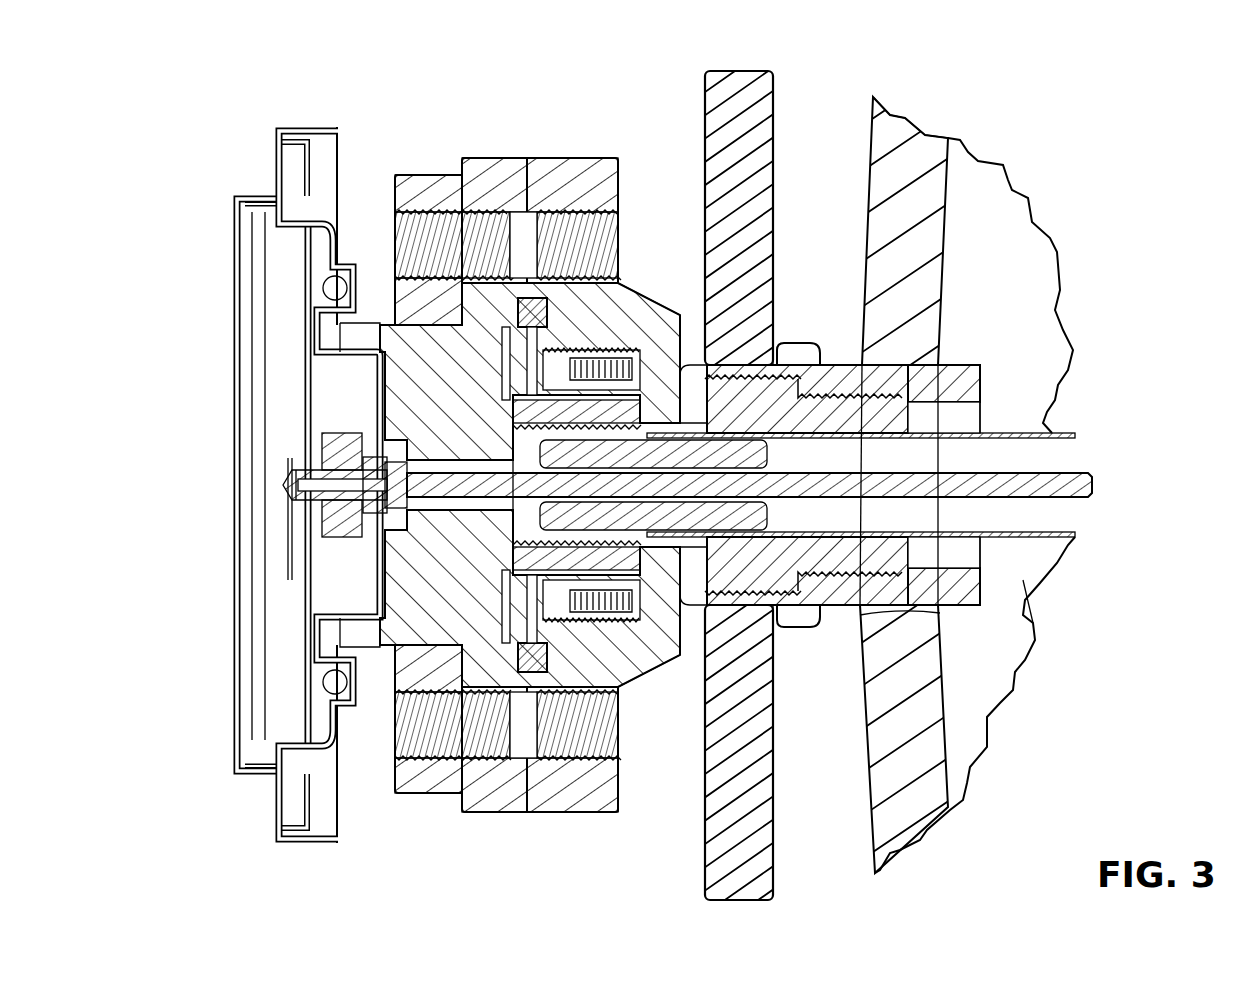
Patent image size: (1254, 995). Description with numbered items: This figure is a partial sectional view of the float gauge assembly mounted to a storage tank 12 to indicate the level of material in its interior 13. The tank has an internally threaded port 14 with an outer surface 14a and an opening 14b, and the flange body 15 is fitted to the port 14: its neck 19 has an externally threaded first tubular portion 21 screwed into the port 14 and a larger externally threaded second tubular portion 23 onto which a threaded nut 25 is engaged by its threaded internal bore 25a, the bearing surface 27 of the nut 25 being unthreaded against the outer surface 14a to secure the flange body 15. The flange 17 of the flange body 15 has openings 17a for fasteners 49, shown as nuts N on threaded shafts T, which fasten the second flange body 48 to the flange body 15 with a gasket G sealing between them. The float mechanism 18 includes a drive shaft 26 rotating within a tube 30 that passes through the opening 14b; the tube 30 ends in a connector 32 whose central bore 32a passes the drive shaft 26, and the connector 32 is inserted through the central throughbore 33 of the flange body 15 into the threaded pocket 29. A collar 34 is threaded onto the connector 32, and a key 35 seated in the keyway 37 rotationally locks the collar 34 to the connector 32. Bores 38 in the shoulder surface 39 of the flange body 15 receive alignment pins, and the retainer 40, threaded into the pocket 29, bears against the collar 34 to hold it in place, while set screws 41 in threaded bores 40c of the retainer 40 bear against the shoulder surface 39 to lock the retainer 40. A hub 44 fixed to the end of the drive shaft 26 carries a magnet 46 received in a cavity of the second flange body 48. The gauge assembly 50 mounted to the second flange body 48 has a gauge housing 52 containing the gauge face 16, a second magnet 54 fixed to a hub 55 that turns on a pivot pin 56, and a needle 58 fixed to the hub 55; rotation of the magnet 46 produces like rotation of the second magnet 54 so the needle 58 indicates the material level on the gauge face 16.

The storage tank 12 is at (873, 782).
The interior 13 is at (985, 683).
The internally threaded port 14 is at (973, 380).
The outer surface 14a is at (935, 612).
The opening 14b is at (1023, 580).
The flange body 15 is at (559, 153).
The gauge face 16 is at (303, 650).
The flange 17 is at (605, 165).
The openings 17a is at (588, 222).
The float mechanism 18 is at (1090, 472).
The neck 19 is at (694, 313).
The first tubular portion 21 is at (903, 373).
The second tubular portion 23 is at (772, 355).
The threaded nut 25 is at (773, 112).
The threaded internal bore 25a is at (738, 360).
The drive shaft 26 is at (1094, 487).
The bearing surface 27 is at (818, 360).
The threaded pocket 29 is at (596, 718).
The tube 30 is at (1057, 433).
The connector 32 is at (798, 600).
The central bore 32a is at (560, 487).
The central throughbore 33 is at (910, 540).
The collar 34 is at (660, 600).
The key 35 is at (655, 452).
The keyway 37 is at (507, 510).
The bores 38 is at (653, 400).
The shoulder surface 39 is at (585, 445).
The retainer 40 is at (520, 388).
The threaded bores 40c is at (620, 323).
The set screws 41 is at (587, 355).
The hub 44 is at (400, 530).
The magnet 46 is at (488, 602).
The second flange body 48 is at (458, 168).
The fasteners 49 is at (394, 632).
The gauge assembly 50 is at (236, 297).
The gauge housing 52 is at (258, 785).
The second magnet 54 is at (345, 435).
The hub 55 is at (296, 468).
The pivot pin 56 is at (287, 485).
The needle 58 is at (286, 528).
The gasket G is at (598, 745).
The nuts N is at (435, 790).
The threaded shafts T is at (407, 732).